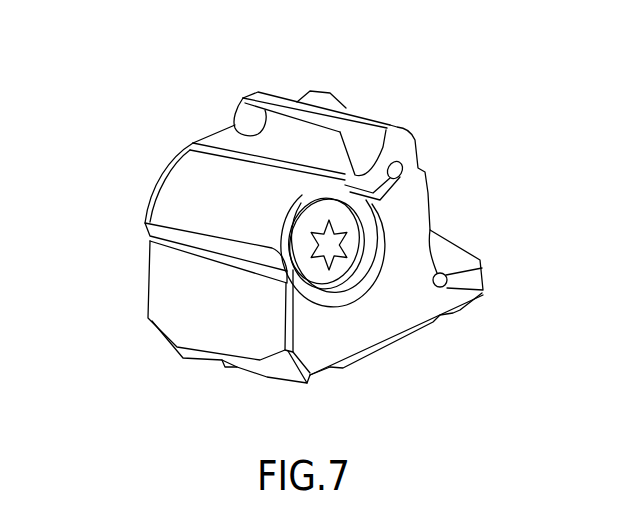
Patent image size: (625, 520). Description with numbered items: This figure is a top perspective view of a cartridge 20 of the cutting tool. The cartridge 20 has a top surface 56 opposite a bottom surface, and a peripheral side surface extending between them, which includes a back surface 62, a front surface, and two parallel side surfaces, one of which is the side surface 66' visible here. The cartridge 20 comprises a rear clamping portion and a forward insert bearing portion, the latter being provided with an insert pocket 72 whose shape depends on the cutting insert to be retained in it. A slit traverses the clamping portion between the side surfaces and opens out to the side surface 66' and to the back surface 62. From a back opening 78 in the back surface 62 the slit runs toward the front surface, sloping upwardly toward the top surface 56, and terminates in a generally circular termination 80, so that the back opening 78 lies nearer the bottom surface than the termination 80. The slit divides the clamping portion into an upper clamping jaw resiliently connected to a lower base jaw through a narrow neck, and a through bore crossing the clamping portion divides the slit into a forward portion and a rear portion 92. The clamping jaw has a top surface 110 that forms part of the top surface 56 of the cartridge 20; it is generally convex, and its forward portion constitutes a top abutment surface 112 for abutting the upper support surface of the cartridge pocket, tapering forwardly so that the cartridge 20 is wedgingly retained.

The cartridge 20 is at (137, 70).
The top surface 56 is at (282, 128).
The back surface 62 is at (175, 294).
The side surface 66' is at (373, 360).
The insert pocket 72 is at (450, 214).
The back opening 78 is at (165, 245).
The generally circular termination 80 is at (397, 167).
The rear portion 92 is at (405, 192).
The top surface of the clamping jaw 110 is at (188, 182).
The top abutment surface 112 is at (237, 153).